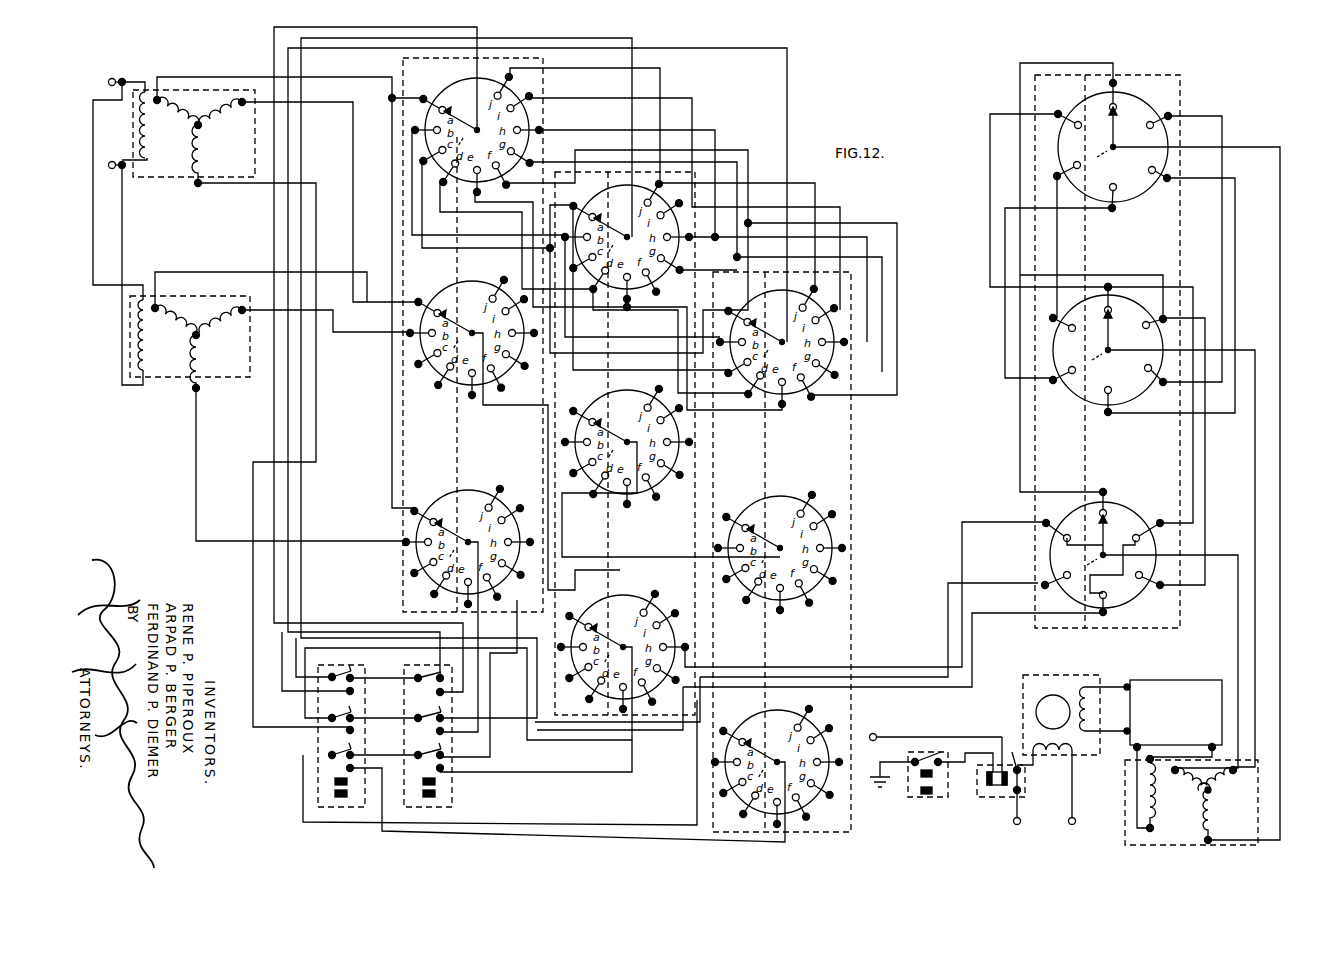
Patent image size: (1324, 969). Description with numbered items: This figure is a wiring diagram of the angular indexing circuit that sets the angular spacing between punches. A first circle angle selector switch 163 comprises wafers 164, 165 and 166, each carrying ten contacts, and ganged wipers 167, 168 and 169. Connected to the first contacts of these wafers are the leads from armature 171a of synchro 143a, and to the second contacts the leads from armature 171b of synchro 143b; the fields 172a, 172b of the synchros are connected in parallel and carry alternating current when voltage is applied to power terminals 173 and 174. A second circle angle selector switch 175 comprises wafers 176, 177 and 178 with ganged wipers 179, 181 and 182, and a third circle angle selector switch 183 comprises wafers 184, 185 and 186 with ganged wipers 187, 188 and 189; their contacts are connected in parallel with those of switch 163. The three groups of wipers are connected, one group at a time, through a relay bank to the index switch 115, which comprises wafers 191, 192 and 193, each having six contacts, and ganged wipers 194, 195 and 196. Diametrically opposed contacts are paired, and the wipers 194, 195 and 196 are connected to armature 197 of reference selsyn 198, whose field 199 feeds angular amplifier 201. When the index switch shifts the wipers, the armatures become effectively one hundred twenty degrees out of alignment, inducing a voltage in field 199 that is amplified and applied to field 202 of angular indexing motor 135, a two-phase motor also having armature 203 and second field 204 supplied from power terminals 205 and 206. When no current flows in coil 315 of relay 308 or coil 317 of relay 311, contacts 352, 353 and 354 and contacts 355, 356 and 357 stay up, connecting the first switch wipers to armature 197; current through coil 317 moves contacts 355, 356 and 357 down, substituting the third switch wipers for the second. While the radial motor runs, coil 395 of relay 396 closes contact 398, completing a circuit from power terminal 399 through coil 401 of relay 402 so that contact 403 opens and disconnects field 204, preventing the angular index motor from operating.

The index switch 115 is at (1185, 105).
The angular indexing motor 135 is at (1057, 675).
The synchro 143a is at (170, 177).
The synchro 143b is at (170, 377).
The first circle angle selector switch 163 is at (403, 411).
The wafer 164 is at (450, 100).
The wafer 165 is at (447, 302).
The wafer 166 is at (444, 510).
The wiper 167 is at (458, 120).
The wiper 168 is at (460, 329).
The wiper 169 is at (458, 536).
The armature 171a is at (205, 145).
The armature 171b is at (202, 348).
The field 172a is at (162, 132).
The field 172b is at (161, 335).
The power terminal 173 is at (105, 74).
The power terminal 174 is at (109, 155).
The second circle angle selector switch 175 is at (700, 178).
The wafer 176 is at (604, 206).
The wafer 177 is at (597, 410).
The wafer 178 is at (626, 610).
The wiper 179 is at (625, 233).
The wiper 181 is at (616, 437).
The wiper 182 is at (612, 642).
The third circle angle selector switch 183 is at (852, 443).
The wafer 184 is at (797, 390).
The wafer 185 is at (783, 506).
The wafer 186 is at (753, 726).
The wiper 187 is at (770, 322).
The wiper 188 is at (769, 543).
The wiper 189 is at (768, 756).
The wafer 191 is at (1086, 108).
The wafer 192 is at (1128, 400).
The wafer 193 is at (1120, 515).
The wiper 194 is at (1110, 145).
The wiper 195 is at (1110, 340).
The wiper 196 is at (1112, 540).
The armature 197 is at (1210, 805).
The reference selsyn 198 is at (1125, 793).
The field 199 is at (1154, 795).
The angular amplifier 201 is at (1178, 680).
The field 202 is at (1088, 696).
The armature 203 is at (1040, 707).
The second field 204 is at (1046, 781).
The power terminal 205 is at (1018, 818).
The power terminal 206 is at (1071, 832).
The relay 308 is at (452, 800).
The relay 311 is at (318, 745).
The coil 315 is at (436, 782).
The coil 317 is at (335, 789).
The contact 352 is at (428, 752).
The contact 353 is at (428, 715).
The contact 354 is at (425, 686).
The contact 355 is at (341, 752).
The contact 356 is at (341, 714).
The contact 357 is at (341, 672).
The coil 395 is at (928, 795).
The relay 396 is at (912, 797).
The contact 398 is at (928, 753).
The power terminal 399 is at (875, 733).
The coil 401 is at (997, 785).
The relay 402 is at (982, 797).
The contact 403 is at (1021, 777).